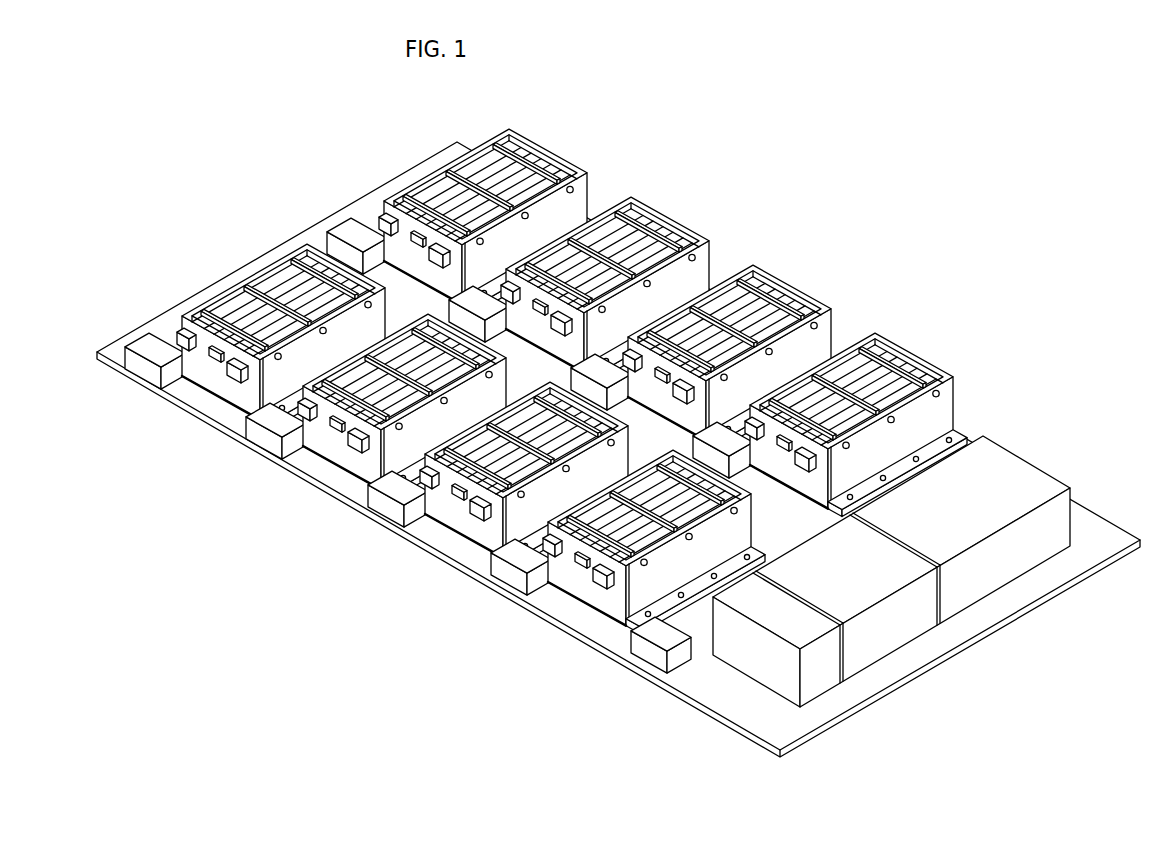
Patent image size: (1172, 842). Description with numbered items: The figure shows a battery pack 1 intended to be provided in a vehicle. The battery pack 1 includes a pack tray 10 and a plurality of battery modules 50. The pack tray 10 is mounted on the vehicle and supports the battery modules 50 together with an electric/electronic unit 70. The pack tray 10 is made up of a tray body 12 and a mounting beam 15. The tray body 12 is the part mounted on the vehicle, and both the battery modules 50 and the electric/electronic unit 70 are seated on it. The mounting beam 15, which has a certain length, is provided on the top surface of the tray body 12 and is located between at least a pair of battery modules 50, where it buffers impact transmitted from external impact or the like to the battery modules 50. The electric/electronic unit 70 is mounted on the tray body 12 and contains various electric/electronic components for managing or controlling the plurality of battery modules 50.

The battery pack 1 is at (618, 443).
The pack tray 10 is at (618, 449).
The tray body 12 is at (449, 540).
The mounting beam 15 is at (388, 508).
The battery module 50 is at (678, 210).
The electric/electronic unit 70 is at (1013, 472).